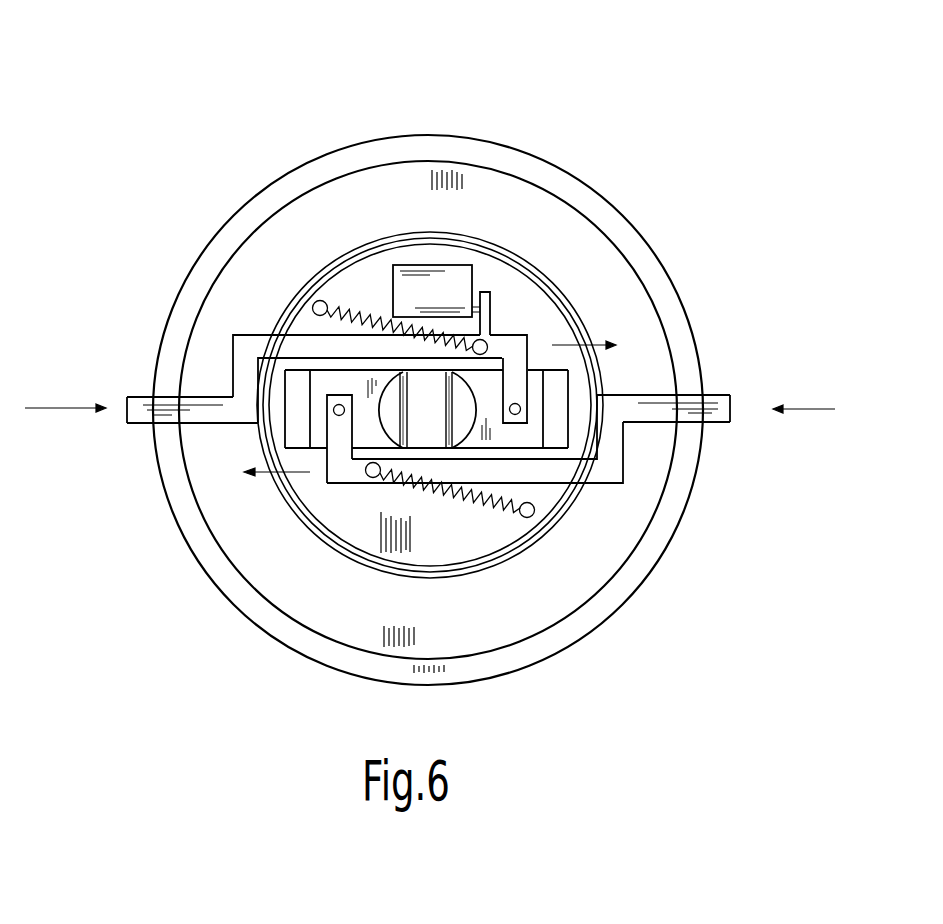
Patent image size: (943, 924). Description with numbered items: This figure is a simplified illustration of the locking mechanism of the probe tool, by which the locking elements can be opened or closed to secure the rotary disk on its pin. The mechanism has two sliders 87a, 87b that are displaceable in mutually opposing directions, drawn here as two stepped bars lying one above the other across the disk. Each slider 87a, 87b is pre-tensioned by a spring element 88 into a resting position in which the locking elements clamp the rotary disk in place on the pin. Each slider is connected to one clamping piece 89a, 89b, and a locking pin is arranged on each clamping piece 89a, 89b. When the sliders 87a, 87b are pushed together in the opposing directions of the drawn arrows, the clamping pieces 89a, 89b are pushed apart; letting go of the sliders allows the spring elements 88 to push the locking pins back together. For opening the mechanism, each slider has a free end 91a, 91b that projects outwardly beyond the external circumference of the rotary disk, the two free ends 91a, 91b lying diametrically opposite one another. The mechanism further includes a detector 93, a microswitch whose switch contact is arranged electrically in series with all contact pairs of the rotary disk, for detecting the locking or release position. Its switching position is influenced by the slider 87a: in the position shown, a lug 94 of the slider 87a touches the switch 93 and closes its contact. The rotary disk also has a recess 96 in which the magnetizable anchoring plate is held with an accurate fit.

The slider 87a is at (250, 343).
The slider 87b is at (595, 468).
The spring element 88 is at (343, 308).
The clamping piece 89a is at (533, 433).
The clamping piece 89b is at (317, 425).
The free end 91a is at (125, 408).
The free end 91b is at (732, 407).
The detector 93 is at (452, 277).
The lug 94 is at (488, 290).
The recess 96 is at (523, 307).